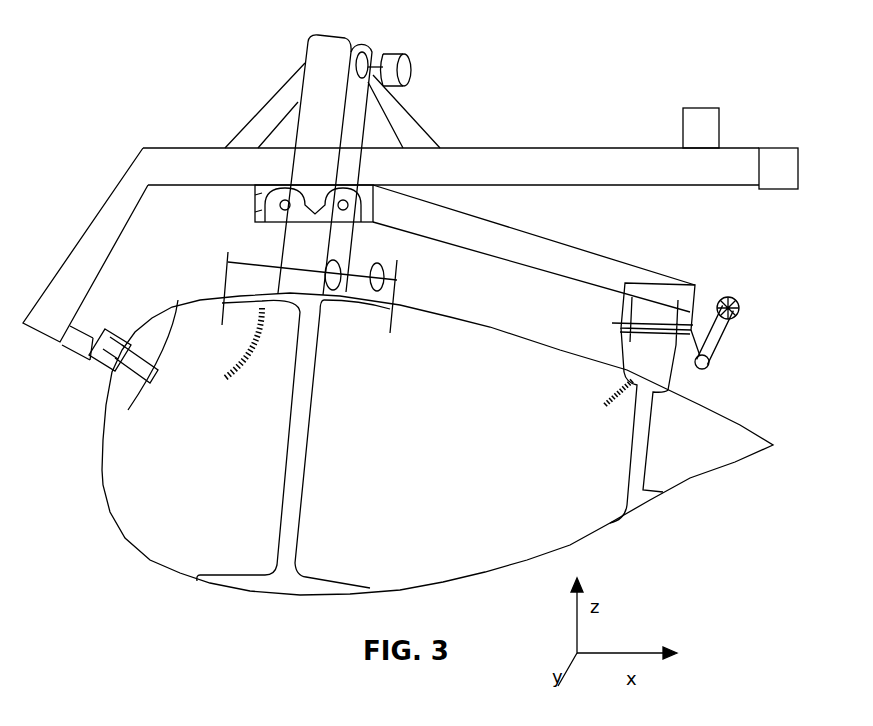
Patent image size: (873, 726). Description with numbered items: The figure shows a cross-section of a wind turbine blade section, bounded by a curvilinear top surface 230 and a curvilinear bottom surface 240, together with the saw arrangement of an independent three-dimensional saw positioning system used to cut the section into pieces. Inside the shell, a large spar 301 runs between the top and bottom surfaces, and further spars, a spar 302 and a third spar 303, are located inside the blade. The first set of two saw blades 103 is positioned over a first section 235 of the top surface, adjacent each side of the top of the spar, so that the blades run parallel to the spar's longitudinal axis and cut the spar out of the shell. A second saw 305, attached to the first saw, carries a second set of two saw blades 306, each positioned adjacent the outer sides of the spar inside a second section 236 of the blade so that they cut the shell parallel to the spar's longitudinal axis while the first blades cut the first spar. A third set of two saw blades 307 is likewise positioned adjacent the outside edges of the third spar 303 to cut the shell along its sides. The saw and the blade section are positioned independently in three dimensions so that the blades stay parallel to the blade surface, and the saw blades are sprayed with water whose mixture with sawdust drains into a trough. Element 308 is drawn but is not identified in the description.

The first set of two saw blades 103 is at (360, 297).
The curvilinear top surface 230 is at (445, 312).
The first section 235 is at (226, 369).
The second section 236 is at (598, 406).
The curvilinear bottom surface 240 is at (443, 582).
The large spar 301 is at (307, 443).
The spar 302 is at (632, 452).
The third spar 303 is at (178, 300).
The second saw 305 is at (657, 295).
The second set of two saw blades 306 is at (103, 367).
The third set of two saw blades 307 is at (100, 440).
The stop block 308 is at (700, 117).